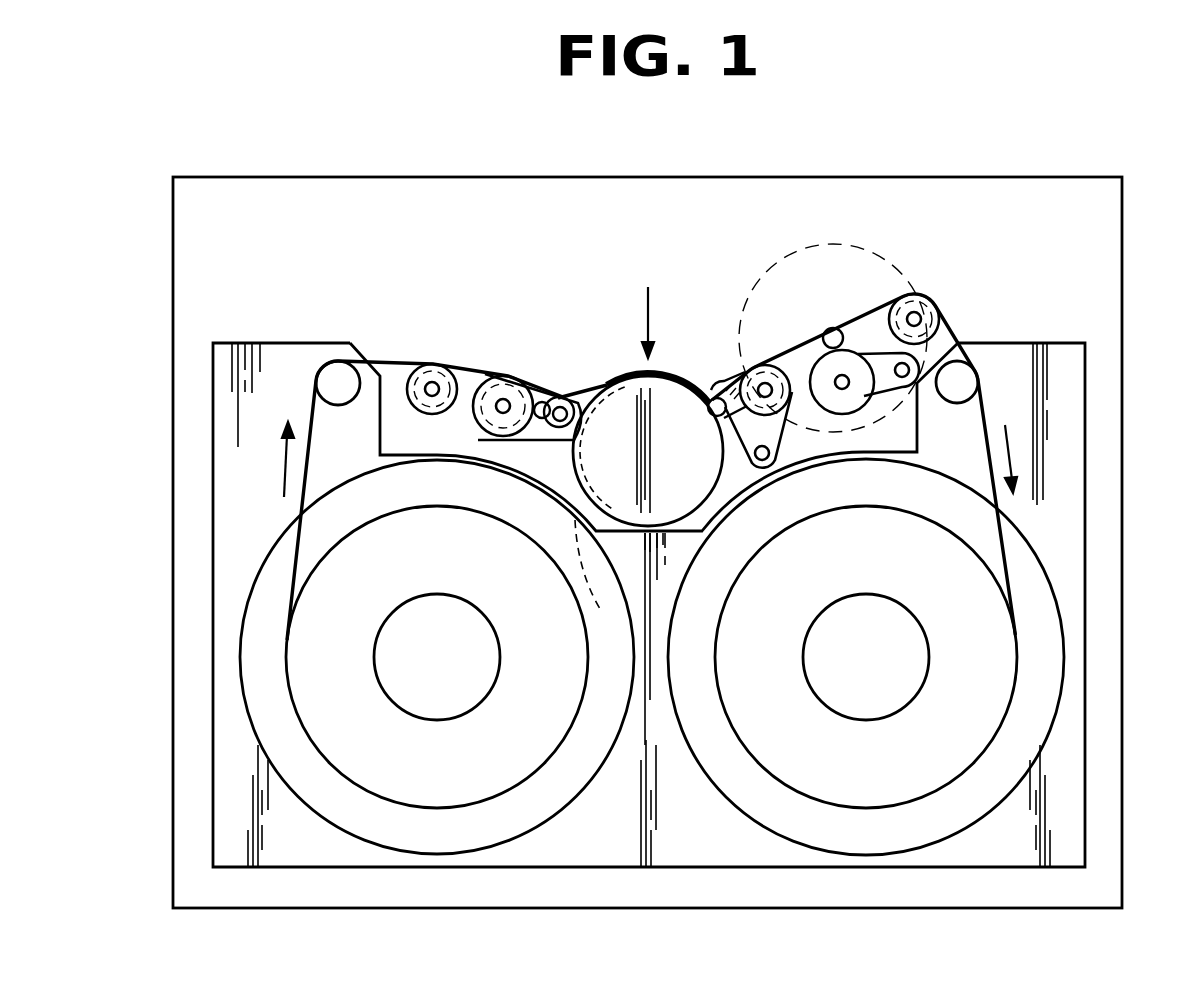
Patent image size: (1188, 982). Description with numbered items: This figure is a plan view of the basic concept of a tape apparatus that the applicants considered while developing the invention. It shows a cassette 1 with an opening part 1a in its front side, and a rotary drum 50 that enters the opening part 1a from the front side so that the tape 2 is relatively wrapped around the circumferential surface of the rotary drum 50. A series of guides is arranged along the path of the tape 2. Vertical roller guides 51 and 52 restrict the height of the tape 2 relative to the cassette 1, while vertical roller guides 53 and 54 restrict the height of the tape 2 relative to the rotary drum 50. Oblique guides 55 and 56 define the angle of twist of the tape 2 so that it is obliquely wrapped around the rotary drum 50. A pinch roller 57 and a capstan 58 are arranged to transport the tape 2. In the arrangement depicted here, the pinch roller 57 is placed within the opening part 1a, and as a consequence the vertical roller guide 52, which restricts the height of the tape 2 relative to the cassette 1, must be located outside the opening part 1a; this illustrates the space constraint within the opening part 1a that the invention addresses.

The cassette 1 is at (1057, 420).
The opening part 1a is at (404, 418).
The tape 2 is at (292, 563).
The rotary drum 50 is at (612, 413).
The vertical roller guide 51 is at (437, 373).
The vertical roller guide 52 is at (916, 306).
The vertical roller guide 53 is at (508, 393).
The vertical roller guide 54 is at (767, 380).
The oblique guide 55 is at (543, 398).
The oblique guide 56 is at (713, 398).
The pinch roller 57 is at (853, 370).
The capstan 58 is at (826, 334).